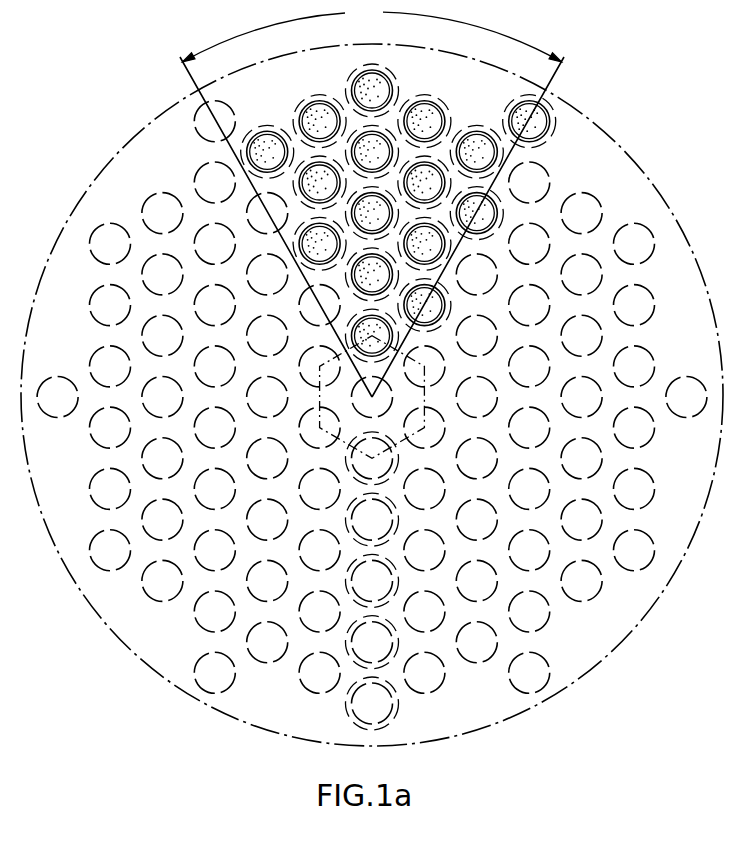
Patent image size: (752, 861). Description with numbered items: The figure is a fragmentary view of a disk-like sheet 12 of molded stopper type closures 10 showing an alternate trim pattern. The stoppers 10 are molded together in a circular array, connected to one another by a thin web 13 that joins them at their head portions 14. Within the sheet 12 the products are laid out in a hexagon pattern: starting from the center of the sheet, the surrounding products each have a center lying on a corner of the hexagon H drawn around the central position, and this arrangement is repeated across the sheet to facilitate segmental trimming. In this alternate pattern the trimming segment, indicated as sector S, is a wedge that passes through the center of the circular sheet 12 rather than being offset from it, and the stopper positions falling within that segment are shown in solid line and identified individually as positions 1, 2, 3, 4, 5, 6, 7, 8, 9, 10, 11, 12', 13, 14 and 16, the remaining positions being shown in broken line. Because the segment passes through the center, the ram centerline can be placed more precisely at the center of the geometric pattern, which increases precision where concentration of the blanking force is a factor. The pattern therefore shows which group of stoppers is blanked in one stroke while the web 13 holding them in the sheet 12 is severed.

The disk-like sheet 12 is at (372, 395).
The sector S' of the plate S is at (372, 200).
The hexagon H is at (427, 406).
The position 1' 1 is at (363, 323).
The position 2' 2 is at (365, 259).
The position 3' 3 is at (367, 197).
The position 4' 4 is at (368, 137).
The position 5' 5 is at (362, 79).
The position 6' 6 is at (312, 106).
The position 7' 7 is at (317, 167).
The position 8' 8 is at (313, 228).
The position 9' 9 is at (425, 110).
The stopper type closure 10 is at (426, 168).
The position 11' 11 is at (422, 229).
The position 12' is at (438, 305).
The thin web 13 is at (495, 208).
The head portion 14 is at (518, 109).
The position 16' 16 is at (262, 137).